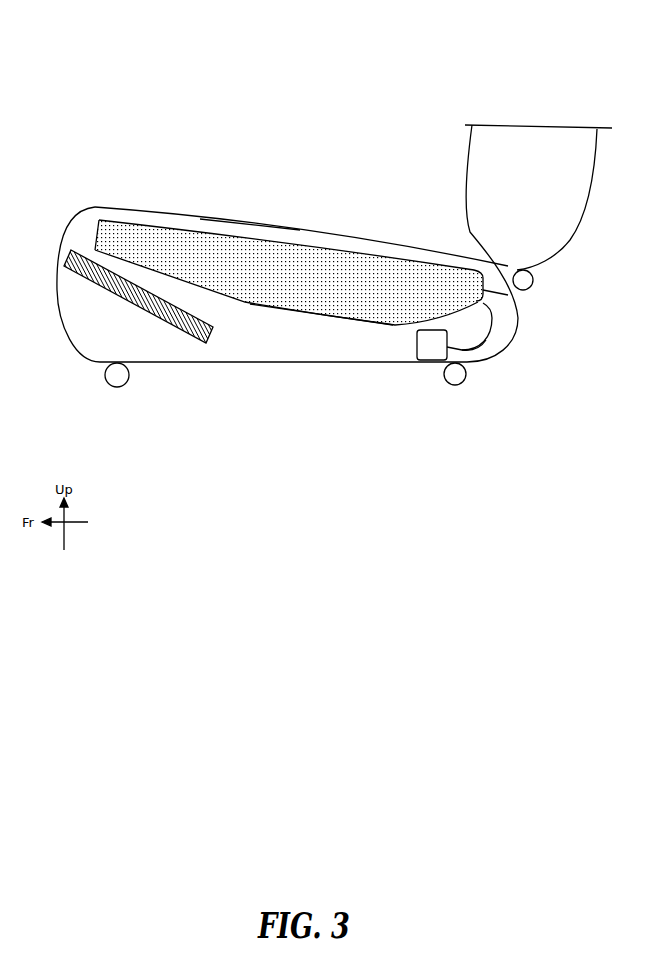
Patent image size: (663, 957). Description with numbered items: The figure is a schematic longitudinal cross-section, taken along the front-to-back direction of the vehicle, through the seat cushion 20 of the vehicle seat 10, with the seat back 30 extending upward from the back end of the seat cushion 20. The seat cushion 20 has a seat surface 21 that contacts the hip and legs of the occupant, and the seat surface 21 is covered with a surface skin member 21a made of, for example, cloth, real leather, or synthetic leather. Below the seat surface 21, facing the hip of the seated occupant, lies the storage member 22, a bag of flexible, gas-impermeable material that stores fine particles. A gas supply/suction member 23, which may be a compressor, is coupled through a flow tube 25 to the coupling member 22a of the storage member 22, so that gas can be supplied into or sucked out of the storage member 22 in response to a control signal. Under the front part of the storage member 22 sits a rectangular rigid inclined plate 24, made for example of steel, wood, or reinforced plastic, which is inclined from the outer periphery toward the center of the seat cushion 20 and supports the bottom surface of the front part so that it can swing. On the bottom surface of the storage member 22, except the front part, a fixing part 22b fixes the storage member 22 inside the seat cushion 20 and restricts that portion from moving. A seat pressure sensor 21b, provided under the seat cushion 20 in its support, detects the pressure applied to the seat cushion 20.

The vehicle seat 10 is at (98, 34).
The seat cushion 20 is at (92, 207).
The seat surface 21 is at (212, 221).
The surface skin member 21a is at (293, 231).
The seat pressure sensor 21b is at (117, 388).
The storage member 22 is at (352, 274).
The coupling member 22a is at (531, 291).
The fixing part 22b is at (304, 316).
The gas supply/suction member 23 is at (431, 343).
The rigid inclined plate 24 is at (69, 249).
The flow tube 25 is at (478, 372).
The seat back 30 is at (513, 126).